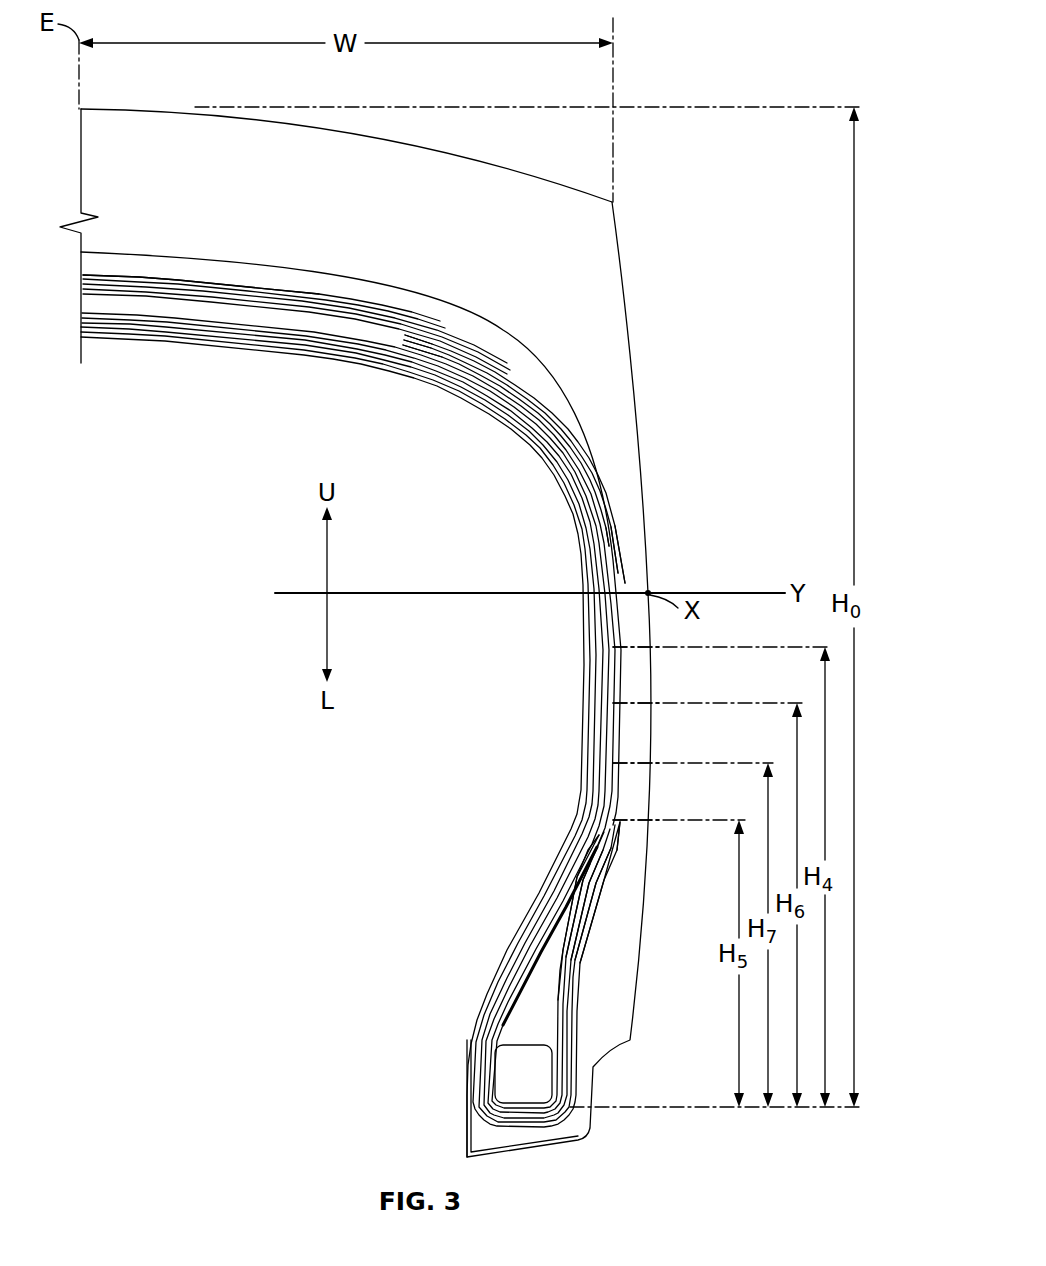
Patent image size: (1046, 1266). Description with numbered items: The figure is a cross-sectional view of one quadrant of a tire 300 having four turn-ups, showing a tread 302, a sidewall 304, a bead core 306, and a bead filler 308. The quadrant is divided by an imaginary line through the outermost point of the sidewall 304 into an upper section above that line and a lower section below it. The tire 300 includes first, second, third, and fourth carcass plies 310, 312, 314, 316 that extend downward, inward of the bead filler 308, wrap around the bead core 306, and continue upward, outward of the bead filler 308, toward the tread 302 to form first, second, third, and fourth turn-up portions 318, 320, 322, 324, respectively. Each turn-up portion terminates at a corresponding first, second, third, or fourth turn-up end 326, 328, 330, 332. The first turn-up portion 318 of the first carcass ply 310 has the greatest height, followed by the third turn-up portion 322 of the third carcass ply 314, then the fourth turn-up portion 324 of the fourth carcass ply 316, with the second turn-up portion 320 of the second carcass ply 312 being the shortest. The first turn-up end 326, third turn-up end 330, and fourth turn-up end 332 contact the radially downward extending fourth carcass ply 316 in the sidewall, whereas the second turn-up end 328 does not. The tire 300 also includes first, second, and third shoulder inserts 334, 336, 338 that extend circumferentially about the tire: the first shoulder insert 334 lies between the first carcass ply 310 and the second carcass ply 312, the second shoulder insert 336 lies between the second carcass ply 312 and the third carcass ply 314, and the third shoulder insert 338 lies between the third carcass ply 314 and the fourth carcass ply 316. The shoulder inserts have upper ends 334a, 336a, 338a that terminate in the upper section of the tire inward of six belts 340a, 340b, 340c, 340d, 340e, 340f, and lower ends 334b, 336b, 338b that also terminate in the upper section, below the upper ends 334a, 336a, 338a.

The tire 300 is at (402, 633).
The tread 302 is at (486, 160).
The sidewall 304 is at (652, 506).
The bead core 306 is at (502, 1077).
The bead filler 308 is at (523, 1003).
The first carcass ply 310 is at (275, 343).
The second carcass ply 312 is at (222, 332).
The third carcass ply 314 is at (172, 323).
The fourth carcass ply 316 is at (120, 313).
The first turn-up portion 318 is at (600, 883).
The second turn-up portion 320 is at (587, 913).
The third turn-up portion 322 is at (577, 938).
The fourth turn-up portion 324 is at (567, 960).
The first turn-up end 326 is at (615, 648).
The second turn-up end 328 is at (615, 820).
The third turn-up end 330 is at (615, 703).
The fourth turn-up end 332 is at (615, 763).
The first shoulder insert 334 is at (543, 482).
The upper end of first shoulder insert 334a is at (398, 368).
The lower end of first shoulder insert 334b is at (577, 583).
The second shoulder insert 336 is at (520, 455).
The upper end of second shoulder insert 336a is at (416, 333).
The lower end of second shoulder insert 336b is at (587, 577).
The third shoulder insert 338 is at (520, 423).
The upper end of third shoulder insert 338a is at (404, 334).
The lower end of third shoulder insert 338b is at (583, 550).
The belt 340a is at (115, 307).
The belt 340b is at (167, 307).
The belt 340c is at (217, 302).
The belt 340d is at (257, 300).
The belt 340e is at (307, 303).
The belt 340f is at (342, 300).